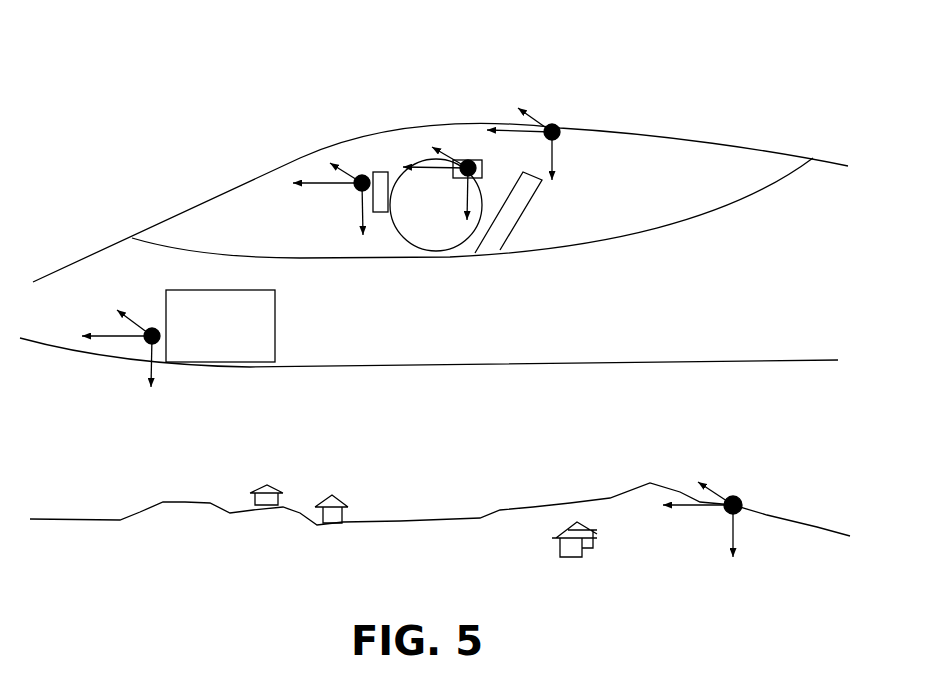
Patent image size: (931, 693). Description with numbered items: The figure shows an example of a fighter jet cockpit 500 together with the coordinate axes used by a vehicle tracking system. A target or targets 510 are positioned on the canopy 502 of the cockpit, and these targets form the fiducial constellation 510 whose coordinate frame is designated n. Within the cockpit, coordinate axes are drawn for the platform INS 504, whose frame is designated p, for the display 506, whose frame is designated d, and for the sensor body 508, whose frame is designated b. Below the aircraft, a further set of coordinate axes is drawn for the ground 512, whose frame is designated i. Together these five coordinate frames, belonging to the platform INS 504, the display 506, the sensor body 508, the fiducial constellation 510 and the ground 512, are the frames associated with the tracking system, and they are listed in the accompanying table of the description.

The fighter jet cockpit 500 is at (220, 63).
The canopy 502 is at (240, 185).
The platform INS 504 is at (275, 333).
The display 506 is at (383, 172).
The sensor body 508 is at (470, 160).
The fiducial constellation 510 is at (557, 124).
The ground 512 is at (740, 498).